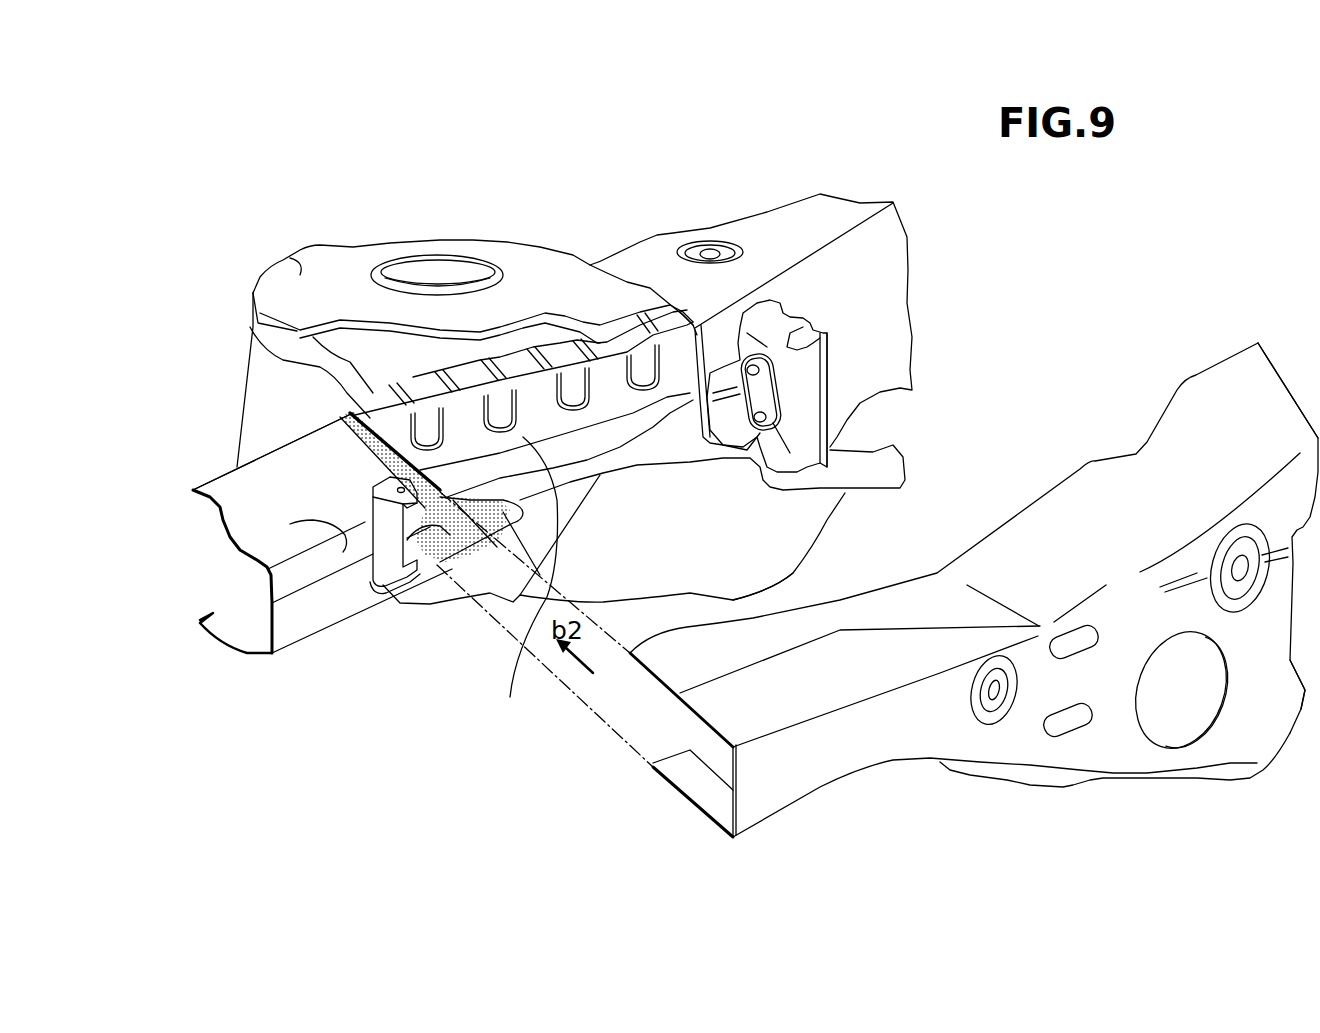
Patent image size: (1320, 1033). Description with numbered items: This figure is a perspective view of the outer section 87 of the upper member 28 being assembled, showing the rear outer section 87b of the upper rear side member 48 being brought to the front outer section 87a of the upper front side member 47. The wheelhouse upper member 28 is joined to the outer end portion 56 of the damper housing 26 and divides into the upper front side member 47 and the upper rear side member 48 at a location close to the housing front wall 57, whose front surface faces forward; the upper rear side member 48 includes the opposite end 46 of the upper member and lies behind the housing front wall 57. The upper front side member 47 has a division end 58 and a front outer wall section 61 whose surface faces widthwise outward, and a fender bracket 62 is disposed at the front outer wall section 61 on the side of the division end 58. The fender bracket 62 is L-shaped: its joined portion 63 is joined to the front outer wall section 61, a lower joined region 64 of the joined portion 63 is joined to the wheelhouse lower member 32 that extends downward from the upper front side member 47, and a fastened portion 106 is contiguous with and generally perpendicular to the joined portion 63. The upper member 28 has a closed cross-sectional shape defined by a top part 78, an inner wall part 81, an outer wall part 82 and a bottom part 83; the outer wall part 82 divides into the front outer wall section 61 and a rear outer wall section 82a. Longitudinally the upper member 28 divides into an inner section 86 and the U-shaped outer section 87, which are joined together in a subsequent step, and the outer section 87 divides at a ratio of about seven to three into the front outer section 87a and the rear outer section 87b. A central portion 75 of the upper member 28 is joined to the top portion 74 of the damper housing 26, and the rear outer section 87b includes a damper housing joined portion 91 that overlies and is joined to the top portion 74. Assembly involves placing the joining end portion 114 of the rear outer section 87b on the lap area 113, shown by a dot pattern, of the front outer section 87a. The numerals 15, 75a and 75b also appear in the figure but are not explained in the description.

The front vehicle body structure 15 is at (302, 176).
The damper housing 26 is at (357, 228).
The wheelhouse upper member 28 is at (1018, 248).
The wheelhouse lower member 32 is at (332, 636).
The opposite end 46 is at (863, 192).
The upper front side member 47 is at (260, 431).
The upper rear side member 48 is at (766, 200).
The outer end portion 56 is at (550, 338).
The housing front wall 57 is at (280, 373).
The division end 58 is at (423, 467).
The front outer wall section 61 is at (265, 560).
The fender bracket 62 is at (348, 498).
The joined portion 63 is at (453, 540).
The lower joined region 64 is at (390, 560).
The top portion 74 is at (517, 290).
The central portion 75 is at (838, 610).
The serrated side wall portion 75a is at (597, 347).
The lower side wall portion 75b is at (763, 586).
The top part 78 is at (783, 688).
The inner wall part 81 is at (656, 513).
The outer wall part 82 is at (879, 738).
The rear outer wall section 82a is at (1297, 684).
The bottom part 83 is at (715, 765).
The inner section 86 is at (922, 330).
The outer section 87 is at (1168, 380).
The front outer section 87a is at (295, 583).
The rear outer section 87b is at (1288, 390).
The damper housing joined portion 91 is at (690, 632).
The fastened portion 106 is at (387, 480).
The lap area 113 is at (403, 420).
The joining end portion 114 is at (690, 714).